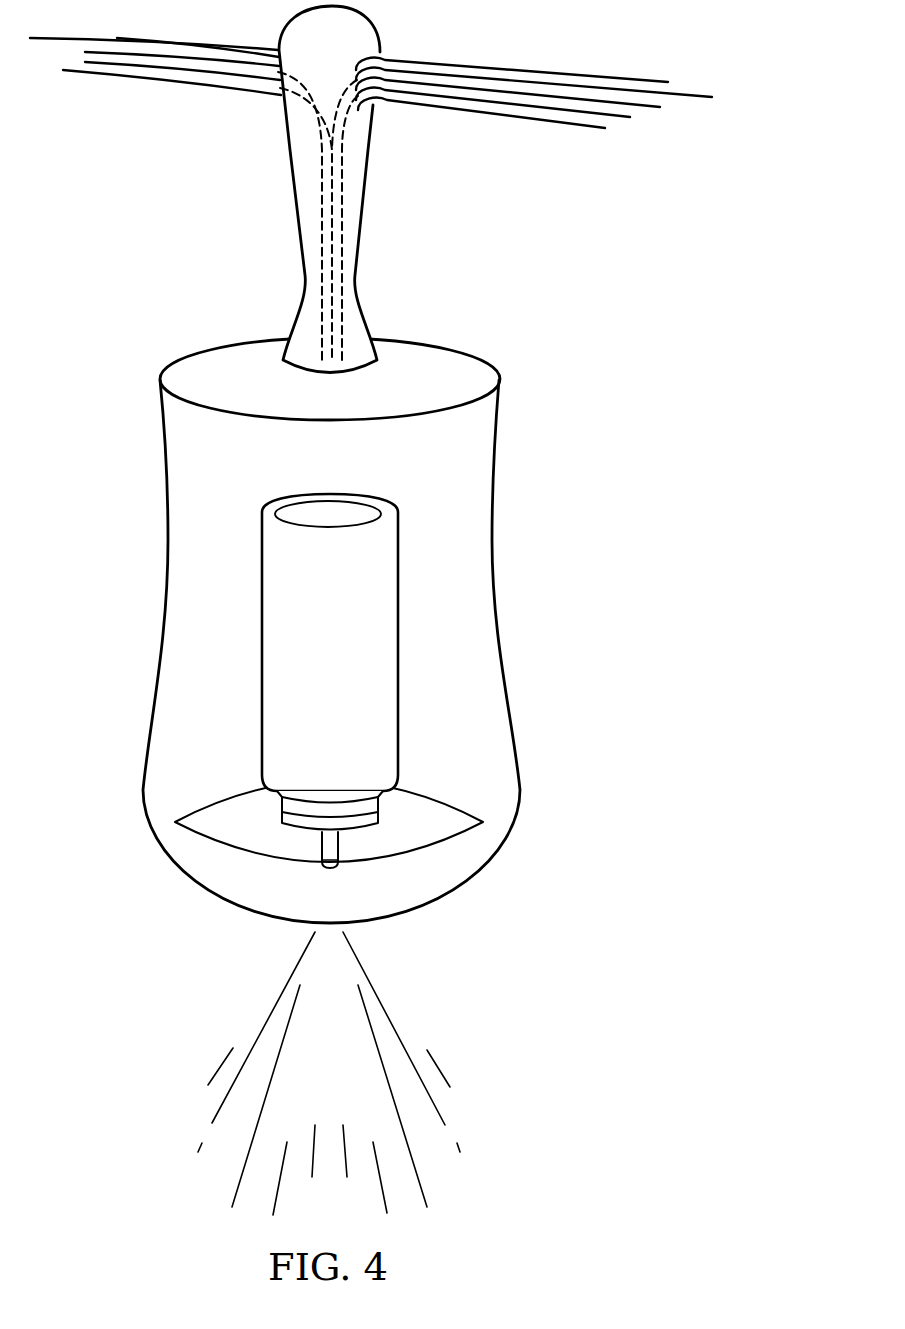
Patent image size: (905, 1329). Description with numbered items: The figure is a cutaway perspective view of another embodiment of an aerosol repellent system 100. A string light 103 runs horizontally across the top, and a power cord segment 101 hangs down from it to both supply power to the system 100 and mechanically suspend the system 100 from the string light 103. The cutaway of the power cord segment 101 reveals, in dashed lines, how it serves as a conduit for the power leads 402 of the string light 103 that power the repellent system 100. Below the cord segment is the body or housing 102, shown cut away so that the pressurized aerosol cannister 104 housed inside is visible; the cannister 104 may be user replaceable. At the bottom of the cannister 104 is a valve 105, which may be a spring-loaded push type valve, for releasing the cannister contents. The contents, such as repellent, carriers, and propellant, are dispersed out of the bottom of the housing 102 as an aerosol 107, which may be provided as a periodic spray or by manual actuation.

The aerosol repellent system 100 is at (243, 338).
The power cord segment 101 is at (372, 179).
The housing 102 is at (176, 590).
The string light 103 is at (528, 67).
The pressurized aerosol cannister 104 is at (353, 686).
The valve 105 is at (347, 836).
The aerosol 107 is at (420, 1178).
The power leads 402 is at (322, 190).